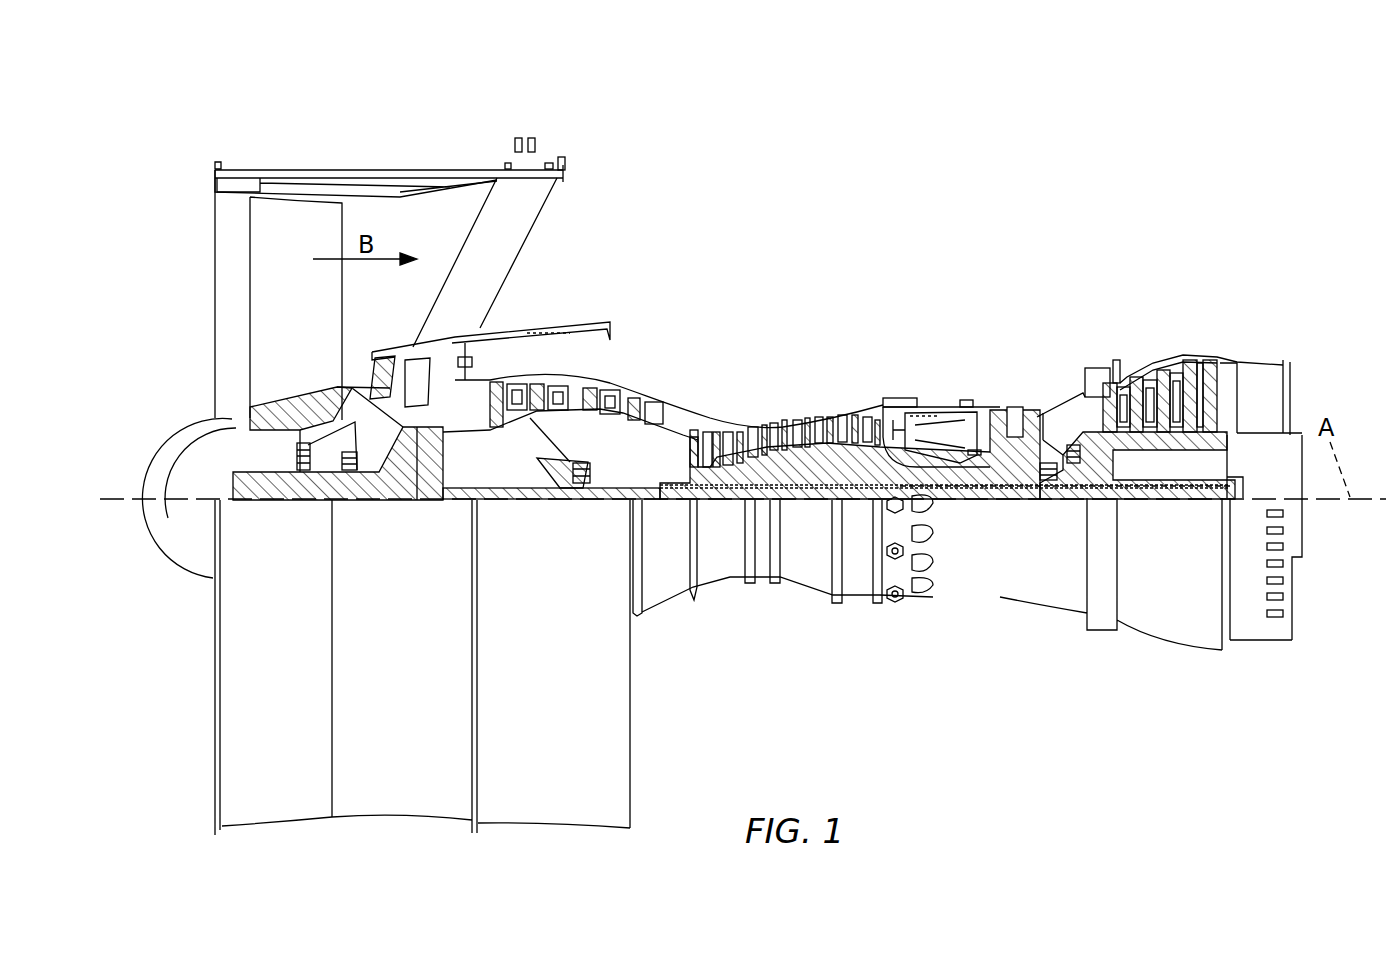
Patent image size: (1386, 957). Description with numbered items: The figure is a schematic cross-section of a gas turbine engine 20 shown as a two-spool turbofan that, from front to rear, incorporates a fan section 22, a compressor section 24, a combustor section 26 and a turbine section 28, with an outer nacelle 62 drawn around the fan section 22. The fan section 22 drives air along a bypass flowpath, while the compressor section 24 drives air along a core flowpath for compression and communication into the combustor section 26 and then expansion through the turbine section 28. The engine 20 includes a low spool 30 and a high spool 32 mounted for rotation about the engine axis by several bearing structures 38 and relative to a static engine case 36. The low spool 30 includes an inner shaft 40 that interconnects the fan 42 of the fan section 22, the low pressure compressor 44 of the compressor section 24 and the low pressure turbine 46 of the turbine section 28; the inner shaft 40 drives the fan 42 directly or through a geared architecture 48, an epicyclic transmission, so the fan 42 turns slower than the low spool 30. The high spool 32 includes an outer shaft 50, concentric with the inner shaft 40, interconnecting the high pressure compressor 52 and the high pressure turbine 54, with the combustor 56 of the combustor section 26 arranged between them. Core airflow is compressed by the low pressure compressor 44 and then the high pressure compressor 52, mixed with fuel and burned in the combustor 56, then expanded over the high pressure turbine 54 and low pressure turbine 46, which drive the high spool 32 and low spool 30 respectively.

The gas turbine engine 20 is at (980, 208).
The fan section 22 is at (470, 150).
The compressor section 24 is at (482, 303).
The combustor section 26 is at (997, 300).
The turbine section 28 is at (1227, 300).
The low spool 30 is at (810, 503).
The high spool 32 is at (853, 463).
The static engine case 36 is at (860, 604).
The bearing structures 38 is at (307, 472).
The inner shaft 40 is at (660, 503).
The fan 42 is at (315, 351).
The low pressure compressor 44 is at (553, 390).
The low pressure turbine 46 is at (1158, 362).
The geared architecture 48 is at (427, 477).
The outer shaft 50 is at (927, 482).
The high pressure compressor 52 is at (793, 463).
The high pressure turbine 54 is at (1013, 405).
The combustor 56 is at (938, 437).
The fan nacelle 62 is at (472, 180).